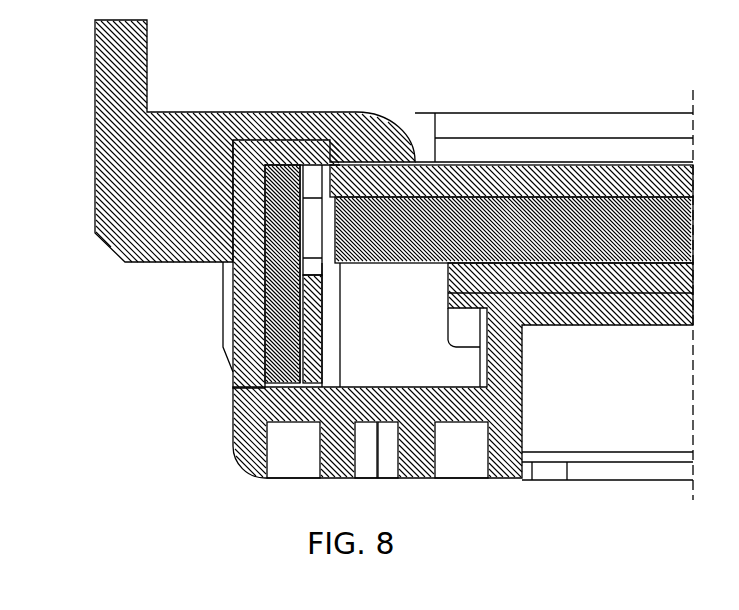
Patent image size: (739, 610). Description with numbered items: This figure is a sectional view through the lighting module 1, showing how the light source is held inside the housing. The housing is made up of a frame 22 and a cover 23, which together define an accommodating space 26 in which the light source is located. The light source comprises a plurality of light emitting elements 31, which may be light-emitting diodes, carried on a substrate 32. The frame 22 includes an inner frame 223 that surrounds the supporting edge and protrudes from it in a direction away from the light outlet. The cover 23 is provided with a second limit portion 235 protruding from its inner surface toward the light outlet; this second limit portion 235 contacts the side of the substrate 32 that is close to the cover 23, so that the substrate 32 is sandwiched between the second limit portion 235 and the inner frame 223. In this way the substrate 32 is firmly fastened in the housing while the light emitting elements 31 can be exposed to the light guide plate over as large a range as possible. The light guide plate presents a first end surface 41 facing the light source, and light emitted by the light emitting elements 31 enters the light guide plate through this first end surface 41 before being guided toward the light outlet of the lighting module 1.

The lighting module 1 is at (196, 401).
The frame 22 is at (178, 127).
The inner frame 223 is at (237, 215).
The cover 23 is at (240, 428).
The second limit portion 235 is at (312, 312).
The accommodating space 26 is at (398, 290).
The light emitting elements 31 is at (310, 242).
The substrate 32 is at (277, 337).
The first end surface 41 is at (337, 223).